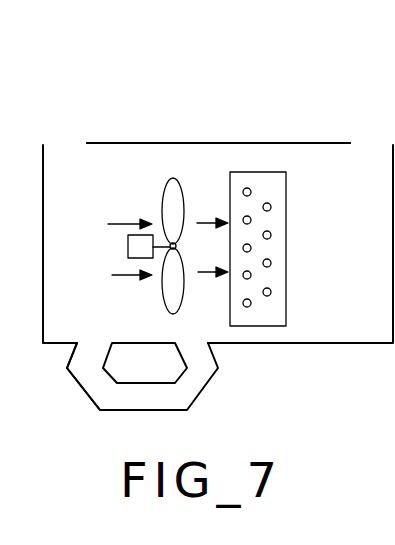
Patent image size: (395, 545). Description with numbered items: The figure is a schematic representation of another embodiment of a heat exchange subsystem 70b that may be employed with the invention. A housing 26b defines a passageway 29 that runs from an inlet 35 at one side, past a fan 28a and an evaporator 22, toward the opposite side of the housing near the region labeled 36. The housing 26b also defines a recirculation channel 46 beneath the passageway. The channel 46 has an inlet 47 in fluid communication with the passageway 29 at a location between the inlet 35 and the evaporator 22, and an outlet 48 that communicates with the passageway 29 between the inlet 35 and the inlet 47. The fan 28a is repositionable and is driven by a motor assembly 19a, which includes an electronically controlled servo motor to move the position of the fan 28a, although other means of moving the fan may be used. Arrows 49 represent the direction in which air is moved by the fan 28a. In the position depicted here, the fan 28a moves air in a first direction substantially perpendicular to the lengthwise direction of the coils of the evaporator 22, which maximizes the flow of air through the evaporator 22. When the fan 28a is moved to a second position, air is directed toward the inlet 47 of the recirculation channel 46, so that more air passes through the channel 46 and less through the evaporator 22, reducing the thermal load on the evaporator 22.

The heat exchange subsystem 70b is at (233, 83).
The inlet 35 is at (68, 145).
The passageway 29 is at (113, 160).
The fan 28a is at (167, 205).
The evaporator 22 is at (268, 177).
The right opening 36 is at (372, 145).
The arrows 49 is at (120, 223).
The motor assembly 19a is at (128, 243).
The housing 26b is at (355, 343).
The outlet 48 is at (93, 345).
The inlet 47 is at (193, 345).
The recirculation channel 46 is at (187, 395).